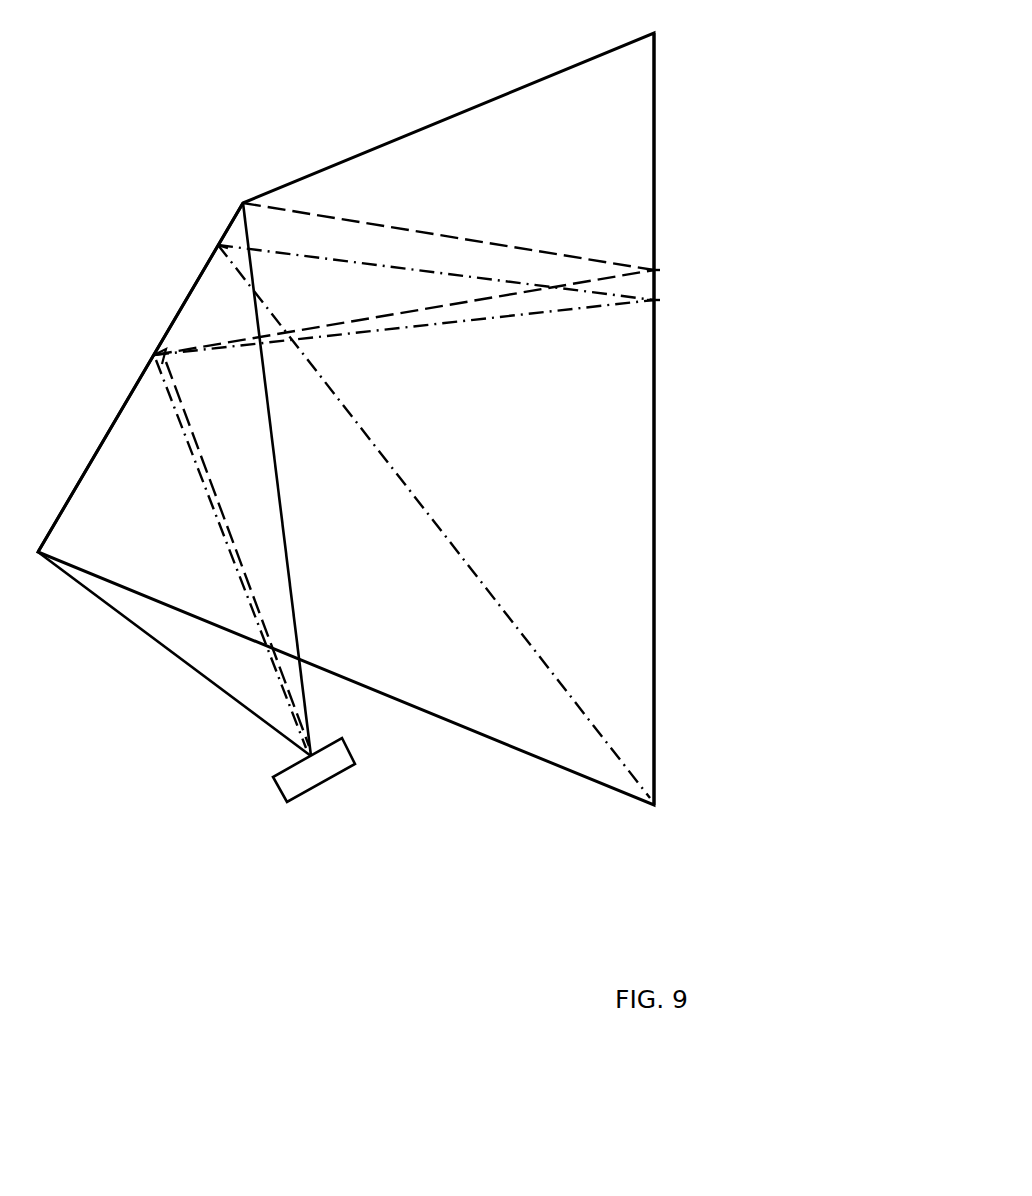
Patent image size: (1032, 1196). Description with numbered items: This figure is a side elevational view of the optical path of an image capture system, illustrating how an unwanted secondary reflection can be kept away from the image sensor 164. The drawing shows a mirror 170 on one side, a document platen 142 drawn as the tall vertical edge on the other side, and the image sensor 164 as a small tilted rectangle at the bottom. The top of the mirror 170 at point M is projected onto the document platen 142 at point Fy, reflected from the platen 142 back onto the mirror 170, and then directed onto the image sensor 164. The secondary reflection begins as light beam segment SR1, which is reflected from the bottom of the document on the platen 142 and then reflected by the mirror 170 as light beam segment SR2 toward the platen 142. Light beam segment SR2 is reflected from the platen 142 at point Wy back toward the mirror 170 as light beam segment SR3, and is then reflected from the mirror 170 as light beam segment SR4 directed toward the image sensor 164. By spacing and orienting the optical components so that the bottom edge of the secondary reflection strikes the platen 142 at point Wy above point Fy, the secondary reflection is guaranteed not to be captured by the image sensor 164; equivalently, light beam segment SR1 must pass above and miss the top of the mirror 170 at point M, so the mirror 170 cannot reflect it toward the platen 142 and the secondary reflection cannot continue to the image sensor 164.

The mirror 170 is at (187, 298).
The document platen 142 is at (655, 410).
The image sensor 164 is at (337, 783).
The top of mirror M is at (219, 243).
The projection point of mirror top on platen Fy is at (655, 270).
The reflection point of secondary reflection on platen Wy is at (655, 312).
The light beam segment SR1 is at (505, 612).
The light beam segment SR2 is at (432, 272).
The light beam segment SR3 is at (505, 318).
The light beam segment SR4 is at (198, 477).